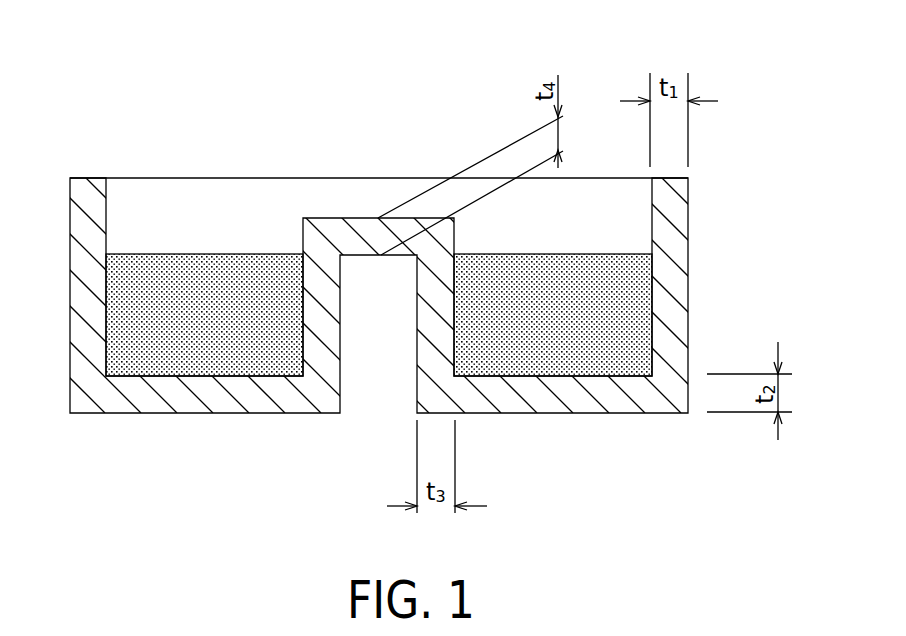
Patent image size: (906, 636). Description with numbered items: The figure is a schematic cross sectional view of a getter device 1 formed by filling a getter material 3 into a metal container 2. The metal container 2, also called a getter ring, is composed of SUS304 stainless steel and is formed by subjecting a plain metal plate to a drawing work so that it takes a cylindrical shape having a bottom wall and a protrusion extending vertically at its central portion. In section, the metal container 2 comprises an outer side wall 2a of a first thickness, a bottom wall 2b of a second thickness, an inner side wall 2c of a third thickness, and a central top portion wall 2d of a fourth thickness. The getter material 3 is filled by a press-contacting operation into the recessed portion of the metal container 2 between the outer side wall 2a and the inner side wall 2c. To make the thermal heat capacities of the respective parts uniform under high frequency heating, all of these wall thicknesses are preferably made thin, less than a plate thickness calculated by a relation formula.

The getter device 1 is at (261, 113).
The metal container 2 is at (688, 197).
The outer side wall 2a is at (680, 262).
The bottom wall 2b is at (572, 400).
The inner side wall 2c is at (430, 362).
The central top portion wall 2d is at (363, 231).
The getter material 3 is at (190, 254).